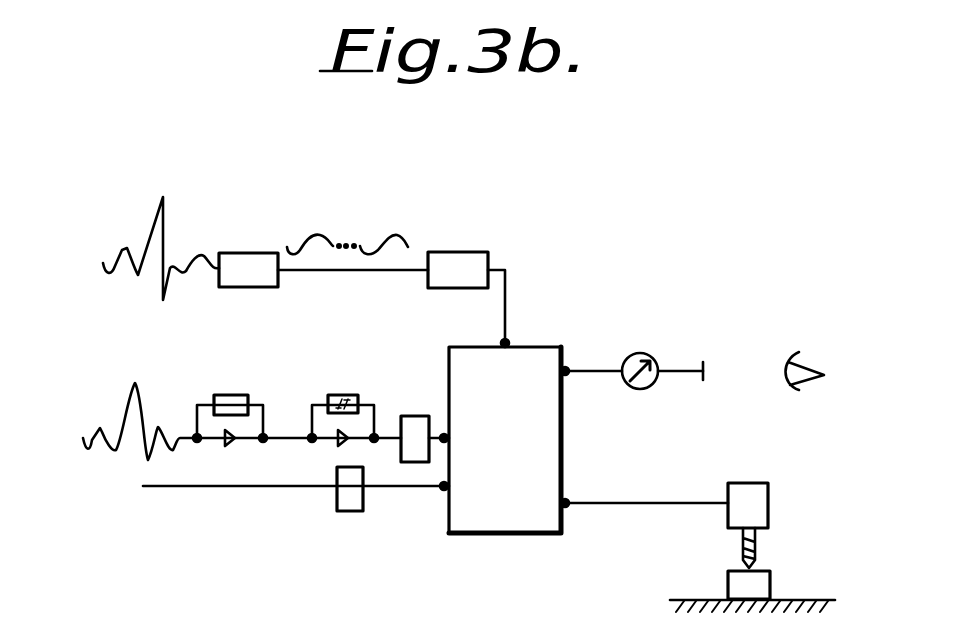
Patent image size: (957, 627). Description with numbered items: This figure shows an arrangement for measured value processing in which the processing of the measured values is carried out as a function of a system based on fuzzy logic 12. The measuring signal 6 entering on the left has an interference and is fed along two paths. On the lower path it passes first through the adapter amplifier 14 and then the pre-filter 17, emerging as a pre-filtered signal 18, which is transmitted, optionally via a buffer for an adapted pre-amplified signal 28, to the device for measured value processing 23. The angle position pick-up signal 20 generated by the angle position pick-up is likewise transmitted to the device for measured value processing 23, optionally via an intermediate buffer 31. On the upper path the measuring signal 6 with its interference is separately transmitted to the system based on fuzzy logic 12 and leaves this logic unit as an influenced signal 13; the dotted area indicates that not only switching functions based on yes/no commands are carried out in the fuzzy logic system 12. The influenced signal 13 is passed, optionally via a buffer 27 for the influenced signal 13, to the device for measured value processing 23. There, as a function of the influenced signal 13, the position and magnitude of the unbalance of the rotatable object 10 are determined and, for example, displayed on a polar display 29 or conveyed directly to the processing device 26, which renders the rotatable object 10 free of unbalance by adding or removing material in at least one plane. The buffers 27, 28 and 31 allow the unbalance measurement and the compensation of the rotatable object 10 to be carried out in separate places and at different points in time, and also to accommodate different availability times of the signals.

The measuring signal 6 is at (125, 248).
The system based on fuzzy logic 12 is at (242, 265).
The influenced signal 13 is at (330, 272).
The buffer for the influenced signal 27 is at (450, 262).
The device for measured value processing 23 is at (523, 368).
The polar display 29 is at (655, 366).
The adapter amplifier 14 is at (261, 402).
The pre-filter 17 is at (347, 394).
The pre-filtered signal 18 is at (388, 436).
The buffer for an adapted pre-amplified signal 28 is at (409, 462).
The angle position pick-up signal 20 is at (387, 487).
The intermediate buffer 31 is at (352, 492).
The processing device 26 is at (745, 500).
The rotatable object 10 is at (757, 585).